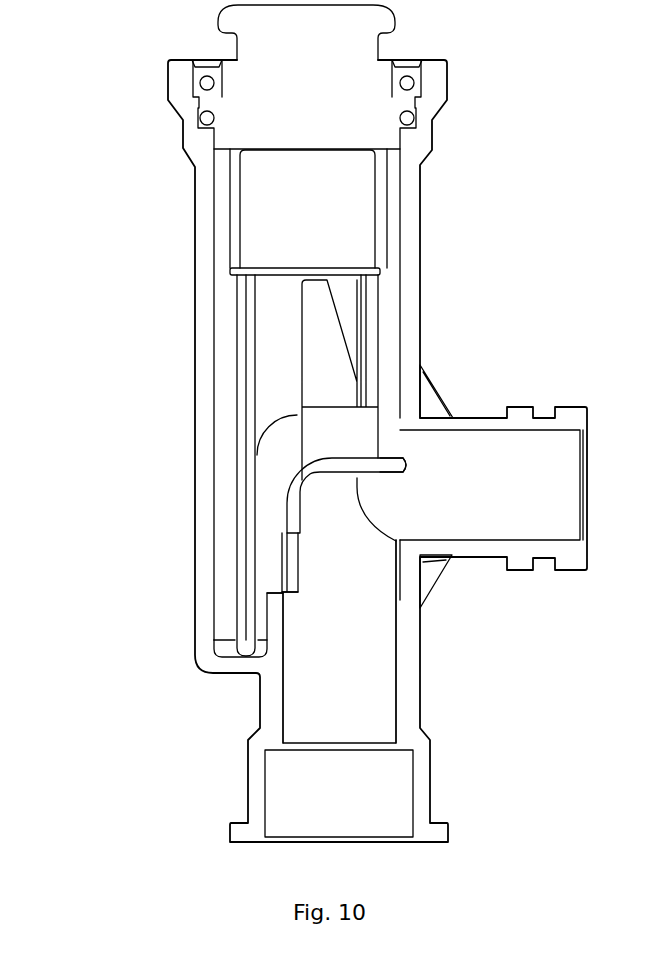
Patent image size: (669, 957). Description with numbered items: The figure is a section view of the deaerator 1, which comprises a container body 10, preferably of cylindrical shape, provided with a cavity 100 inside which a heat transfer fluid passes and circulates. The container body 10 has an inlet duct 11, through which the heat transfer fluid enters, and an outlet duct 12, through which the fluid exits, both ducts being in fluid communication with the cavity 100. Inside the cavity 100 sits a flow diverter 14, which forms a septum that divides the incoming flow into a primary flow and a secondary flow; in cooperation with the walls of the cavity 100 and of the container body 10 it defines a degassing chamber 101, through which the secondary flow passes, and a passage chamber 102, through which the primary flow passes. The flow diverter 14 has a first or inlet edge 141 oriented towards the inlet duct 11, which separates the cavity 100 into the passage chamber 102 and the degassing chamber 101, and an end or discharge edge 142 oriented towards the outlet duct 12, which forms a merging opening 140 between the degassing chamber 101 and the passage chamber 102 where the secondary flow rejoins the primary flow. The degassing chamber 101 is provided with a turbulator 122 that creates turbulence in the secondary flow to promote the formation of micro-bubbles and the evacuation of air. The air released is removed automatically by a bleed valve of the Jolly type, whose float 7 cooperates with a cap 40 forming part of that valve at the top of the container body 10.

The deaerator 1 is at (148, 142).
The container body 10 is at (413, 201).
The inlet duct 11 is at (573, 420).
The outlet duct 12 is at (423, 815).
The flow diverter 14 is at (300, 478).
The cap 40 is at (330, 117).
The float 7 is at (306, 227).
The cavity 100 is at (267, 410).
The degassing chamber 101 is at (277, 323).
The passage chamber 102 is at (337, 515).
The turbulator 122 is at (360, 420).
The merging opening 140 is at (278, 571).
The inlet edge 141 is at (401, 467).
The discharge edge 142 is at (291, 528).